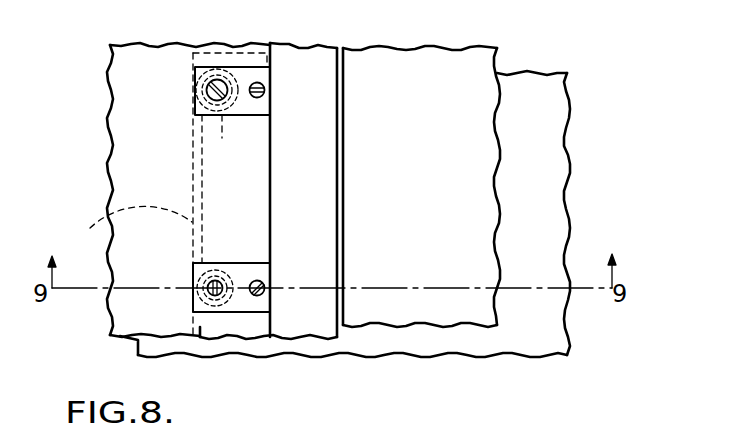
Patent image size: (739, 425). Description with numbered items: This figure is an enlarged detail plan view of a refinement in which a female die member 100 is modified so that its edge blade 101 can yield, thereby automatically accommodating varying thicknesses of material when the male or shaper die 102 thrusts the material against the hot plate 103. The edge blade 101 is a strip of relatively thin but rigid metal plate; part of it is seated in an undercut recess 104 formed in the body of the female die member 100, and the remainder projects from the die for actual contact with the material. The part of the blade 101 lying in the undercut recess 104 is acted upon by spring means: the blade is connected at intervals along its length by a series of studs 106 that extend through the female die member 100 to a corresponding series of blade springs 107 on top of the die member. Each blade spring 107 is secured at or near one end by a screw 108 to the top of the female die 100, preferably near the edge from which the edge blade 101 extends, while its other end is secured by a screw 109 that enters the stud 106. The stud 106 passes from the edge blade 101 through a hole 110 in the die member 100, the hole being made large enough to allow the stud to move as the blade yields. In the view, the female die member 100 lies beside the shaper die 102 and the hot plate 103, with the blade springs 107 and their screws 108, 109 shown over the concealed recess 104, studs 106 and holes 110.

The female die member 100 is at (131, 178).
The edge blade 101 is at (305, 77).
The male or shaper die 102 is at (458, 80).
The hot plate 103 is at (537, 204).
The undercut recess 104 is at (164, 194).
The stud 106 is at (227, 189).
The blade spring 107 is at (239, 75).
The screw 108 is at (262, 94).
The screw 109 is at (212, 283).
The hole 110 is at (225, 258).